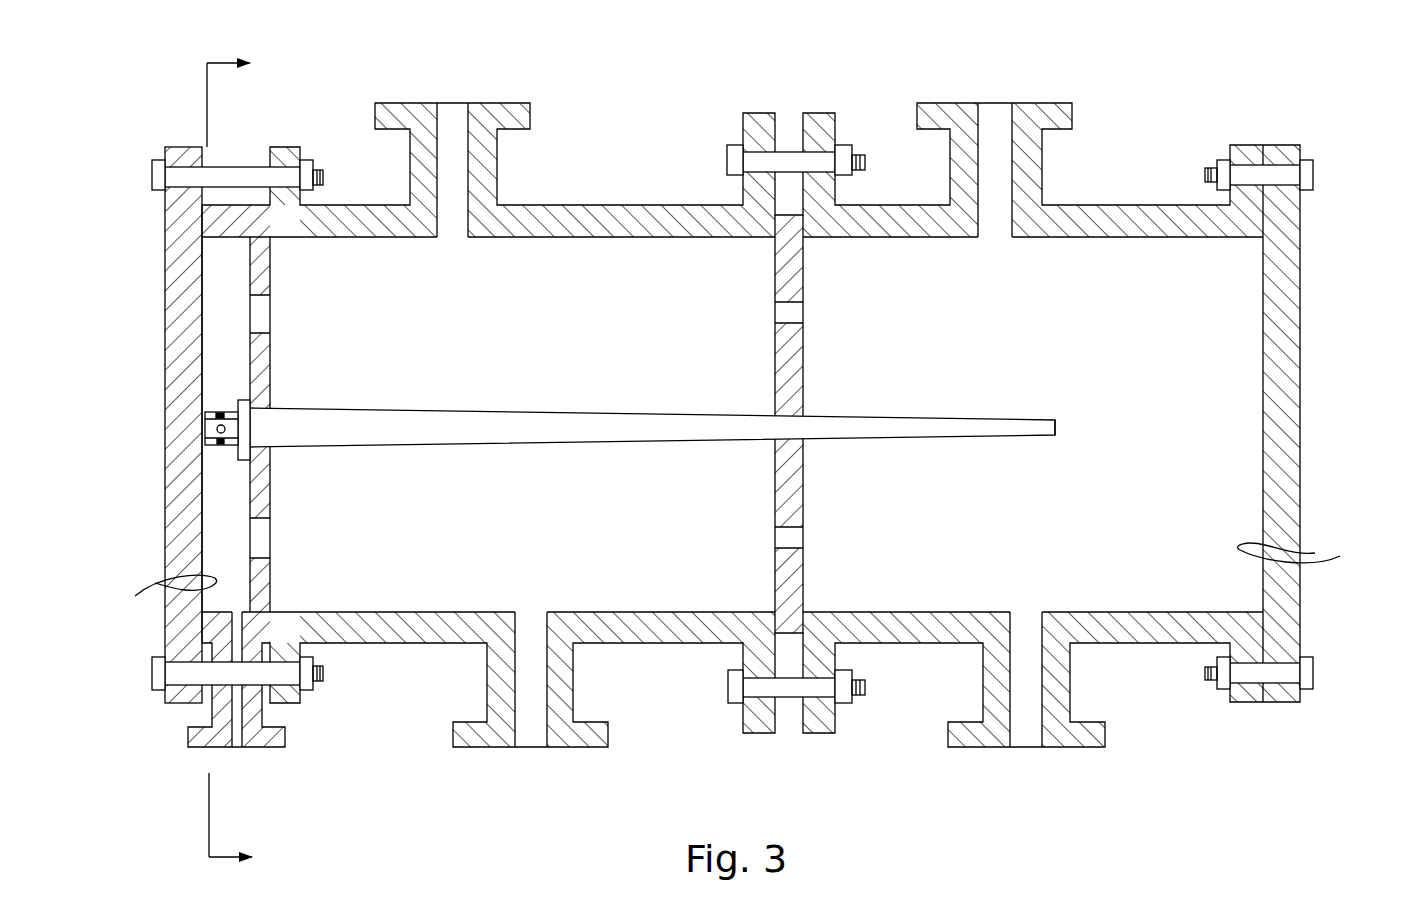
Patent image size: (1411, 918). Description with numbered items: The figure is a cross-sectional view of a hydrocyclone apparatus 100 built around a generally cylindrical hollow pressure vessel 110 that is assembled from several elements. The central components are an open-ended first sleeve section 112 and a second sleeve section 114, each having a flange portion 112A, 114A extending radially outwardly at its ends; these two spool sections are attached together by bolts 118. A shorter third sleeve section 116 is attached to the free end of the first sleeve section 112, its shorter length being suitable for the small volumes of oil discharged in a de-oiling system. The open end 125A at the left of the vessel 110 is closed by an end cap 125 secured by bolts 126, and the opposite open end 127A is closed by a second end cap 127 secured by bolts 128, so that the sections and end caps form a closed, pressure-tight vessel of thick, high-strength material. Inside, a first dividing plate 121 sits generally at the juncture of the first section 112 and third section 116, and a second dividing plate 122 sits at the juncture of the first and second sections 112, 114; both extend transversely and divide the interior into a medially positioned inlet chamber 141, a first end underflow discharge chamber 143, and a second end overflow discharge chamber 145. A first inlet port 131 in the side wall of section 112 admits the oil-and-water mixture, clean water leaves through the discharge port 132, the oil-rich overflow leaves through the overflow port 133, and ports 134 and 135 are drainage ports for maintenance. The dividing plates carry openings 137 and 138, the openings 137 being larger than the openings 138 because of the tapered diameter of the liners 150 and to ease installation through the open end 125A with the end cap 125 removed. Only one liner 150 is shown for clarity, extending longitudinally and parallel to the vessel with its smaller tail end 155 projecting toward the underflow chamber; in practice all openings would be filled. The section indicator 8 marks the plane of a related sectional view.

The hydrocyclone apparatus 100 is at (793, 90).
The pressure vessel 110 is at (638, 174).
The first sleeve section 112 is at (575, 205).
The flange portion of first sleeve section 112A is at (300, 703).
The second sleeve section 114 is at (1165, 205).
The flange portion of second sleeve section 114A is at (820, 735).
The third sleeve section 116 is at (232, 240).
The bolts 118 is at (728, 688).
The first dividing plate 121 is at (272, 478).
The second dividing plate 122 is at (803, 490).
The end cap 125 is at (165, 558).
The open end 125A is at (145, 593).
The bolts 126 is at (152, 178).
The second end cap 127 is at (1300, 435).
The opposite open end 127A is at (1319, 555).
The bolts 128 is at (1315, 182).
The first inlet port 131 is at (448, 103).
The discharge port 132 is at (1000, 103).
The overflow port 133 is at (245, 750).
The drainage port 134 is at (525, 748).
The drainage port 135 is at (1030, 748).
The openings 137 is at (272, 312).
The openings 138 is at (803, 312).
The inlet chamber 141 is at (540, 341).
The first end underflow discharge chamber 143 is at (1068, 349).
The second end overflow discharge chamber 145 is at (215, 515).
The liner 150 is at (590, 447).
The tail end 155 is at (1057, 430).
The section line 8- 8 is at (225, 463).